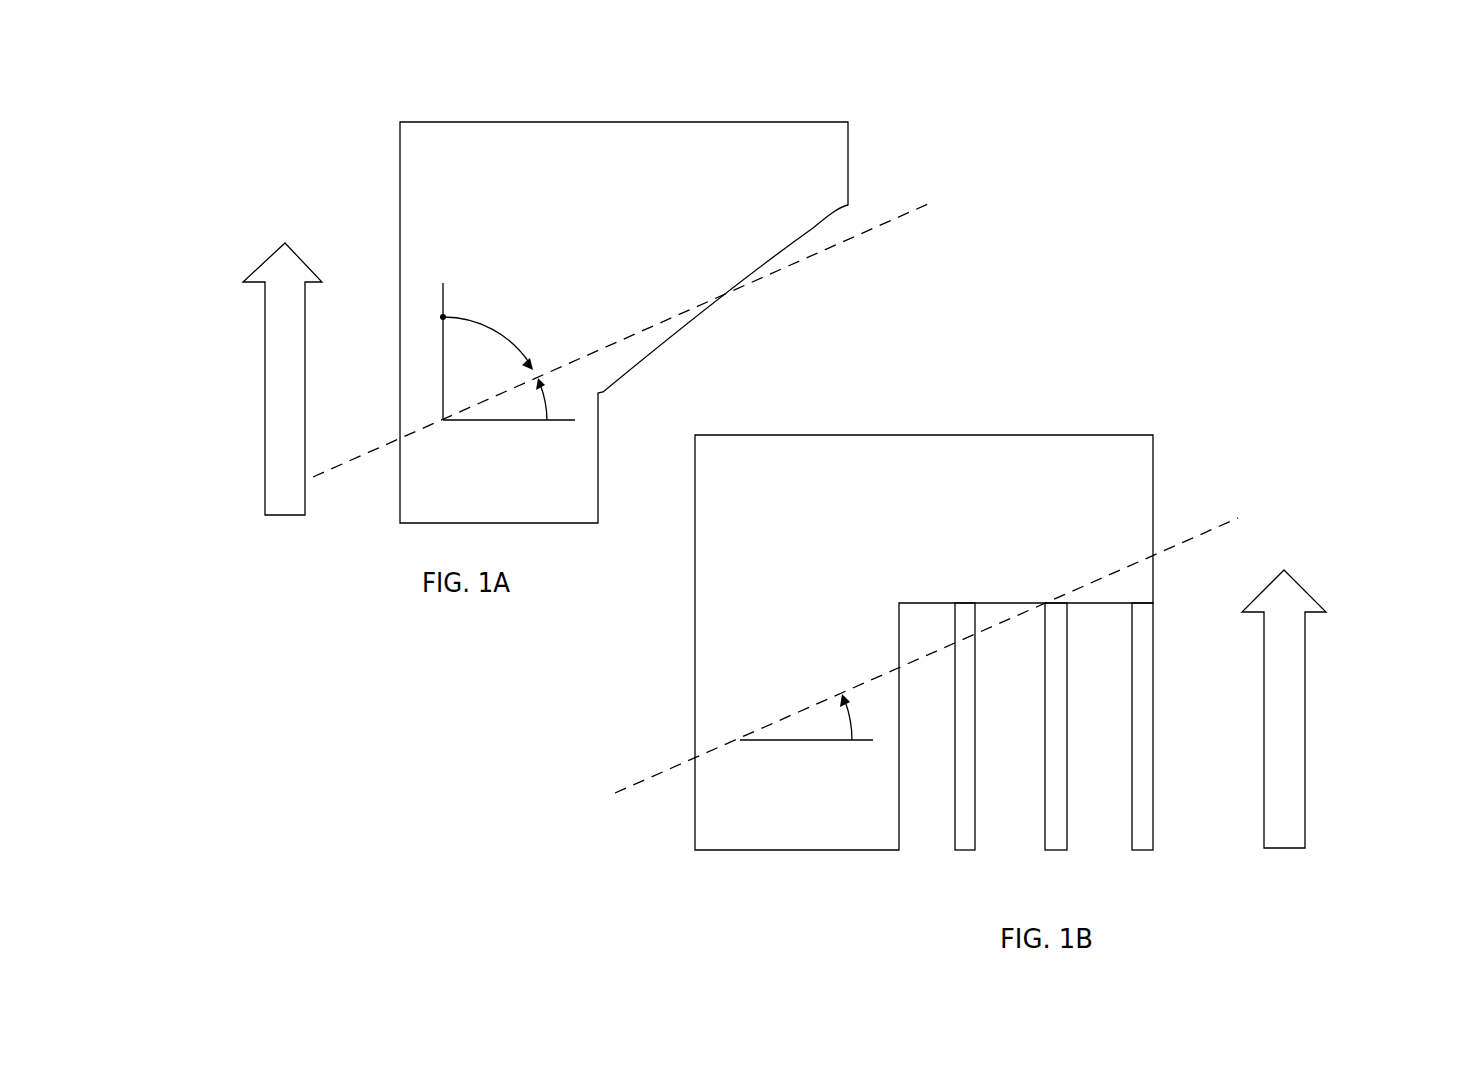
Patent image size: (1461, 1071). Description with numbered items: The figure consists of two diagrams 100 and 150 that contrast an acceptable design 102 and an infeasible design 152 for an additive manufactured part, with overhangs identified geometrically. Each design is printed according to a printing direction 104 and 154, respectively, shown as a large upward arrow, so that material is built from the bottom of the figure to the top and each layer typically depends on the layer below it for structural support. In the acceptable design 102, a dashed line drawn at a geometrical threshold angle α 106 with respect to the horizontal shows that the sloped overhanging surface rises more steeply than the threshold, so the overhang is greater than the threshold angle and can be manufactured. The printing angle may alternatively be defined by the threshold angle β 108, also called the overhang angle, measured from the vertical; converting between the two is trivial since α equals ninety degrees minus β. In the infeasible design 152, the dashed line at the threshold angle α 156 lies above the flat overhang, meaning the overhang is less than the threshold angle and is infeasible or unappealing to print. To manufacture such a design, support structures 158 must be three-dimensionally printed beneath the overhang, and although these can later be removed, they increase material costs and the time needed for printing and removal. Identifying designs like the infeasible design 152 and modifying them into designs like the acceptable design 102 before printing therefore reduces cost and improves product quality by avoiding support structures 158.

In FIG. 1A, the diagram 100 is at (807, 83).
In FIG. 1A, the acceptable design 102 is at (657, 158).
In FIG. 1A, the printing direction 104 is at (265, 371).
In FIG. 1A, the threshold angle α 106 is at (790, 265).
In FIG. 1A, the threshold angle β 108 is at (443, 317).
In FIG. 1B, the diagram 150 is at (1264, 415).
In FIG. 1B, the infeasible design 152 is at (938, 474).
In FIG. 1B, the printing direction 154 is at (1305, 717).
In FIG. 1B, the threshold angle α 156 is at (1200, 536).
In FIG. 1B, the support structures 158 is at (1143, 850).